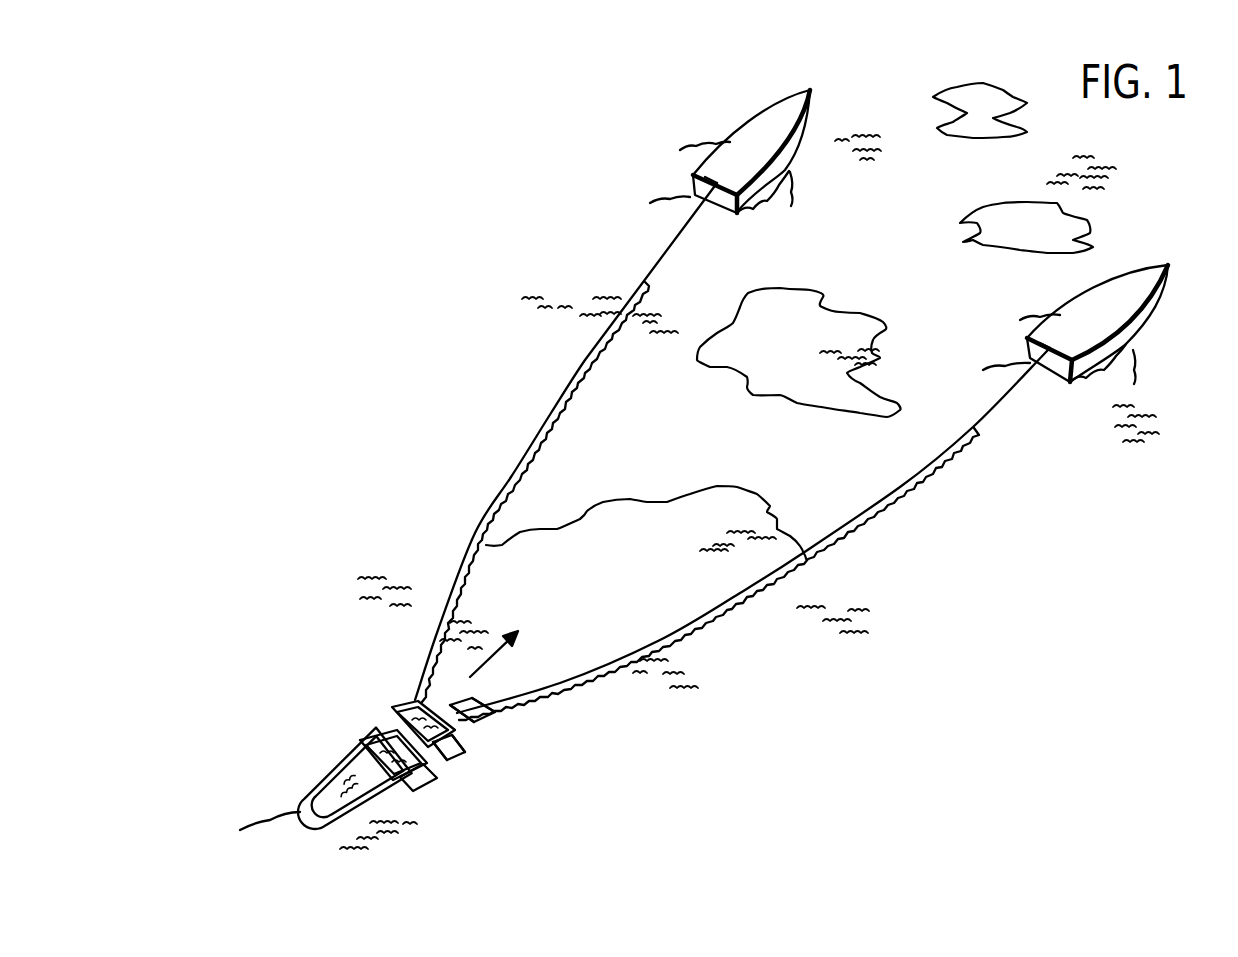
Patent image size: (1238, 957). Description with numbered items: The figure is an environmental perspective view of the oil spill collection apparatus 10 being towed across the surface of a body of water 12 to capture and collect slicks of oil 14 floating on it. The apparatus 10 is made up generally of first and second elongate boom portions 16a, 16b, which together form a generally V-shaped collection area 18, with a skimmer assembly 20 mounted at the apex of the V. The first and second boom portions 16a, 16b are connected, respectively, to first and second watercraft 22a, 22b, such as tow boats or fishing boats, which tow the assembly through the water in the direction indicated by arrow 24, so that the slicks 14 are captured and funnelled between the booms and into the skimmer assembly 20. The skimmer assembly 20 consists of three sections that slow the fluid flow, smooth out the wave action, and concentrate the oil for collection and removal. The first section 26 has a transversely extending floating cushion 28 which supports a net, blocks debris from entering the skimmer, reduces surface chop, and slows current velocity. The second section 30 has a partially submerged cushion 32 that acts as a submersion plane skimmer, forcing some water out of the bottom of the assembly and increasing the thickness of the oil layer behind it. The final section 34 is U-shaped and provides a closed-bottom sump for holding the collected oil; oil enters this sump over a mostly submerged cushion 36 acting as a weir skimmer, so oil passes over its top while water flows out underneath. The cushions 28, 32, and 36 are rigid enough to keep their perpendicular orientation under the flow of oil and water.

The collection apparatus 10 is at (521, 401).
The body of water 12 is at (793, 681).
The slicks of oil 14 is at (963, 221).
The first elongate boom portion 16a is at (490, 480).
The second elongate boom portion 16b is at (875, 514).
The V-shaped collection area 18 is at (691, 430).
The skimmer assembly 20 is at (378, 746).
The first watercraft 22a is at (733, 135).
The second watercraft 22b is at (1073, 310).
The arrow 24 is at (493, 657).
The first section 26 is at (388, 712).
The floating cushion 28 is at (480, 717).
The second section 30 is at (358, 741).
The partially submerged cushion 32 is at (457, 757).
The final section 34 is at (311, 783).
The mostly submerged cushion 36 is at (420, 777).